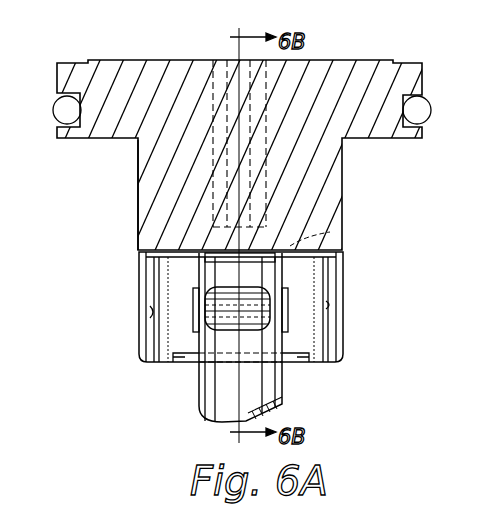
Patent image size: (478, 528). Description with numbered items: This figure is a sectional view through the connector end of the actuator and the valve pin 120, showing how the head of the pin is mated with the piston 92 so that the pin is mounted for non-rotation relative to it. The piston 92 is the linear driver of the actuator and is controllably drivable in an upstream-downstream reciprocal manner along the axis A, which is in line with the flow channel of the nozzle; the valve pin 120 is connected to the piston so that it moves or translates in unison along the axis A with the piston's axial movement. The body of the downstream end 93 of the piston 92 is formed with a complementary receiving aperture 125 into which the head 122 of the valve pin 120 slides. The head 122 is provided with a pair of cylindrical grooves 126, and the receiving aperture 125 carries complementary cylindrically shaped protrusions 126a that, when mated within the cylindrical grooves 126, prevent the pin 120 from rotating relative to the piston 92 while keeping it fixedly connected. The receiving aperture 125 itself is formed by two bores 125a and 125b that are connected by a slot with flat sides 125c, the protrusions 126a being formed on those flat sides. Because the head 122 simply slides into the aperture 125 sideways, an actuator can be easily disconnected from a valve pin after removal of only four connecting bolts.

The piston 92 is at (93, 54).
The downstream end 93 is at (137, 222).
The head 122 is at (200, 262).
The axis A is at (237, 268).
The receiving aperture 125 is at (322, 278).
The bore 125a is at (150, 312).
The bore 125b is at (328, 305).
The slot with flat sides 125c is at (262, 353).
The cylindrical grooves 126 is at (266, 313).
The cylindrically shaped protrusions 126a is at (292, 246).
The valve pin 120 is at (199, 401).